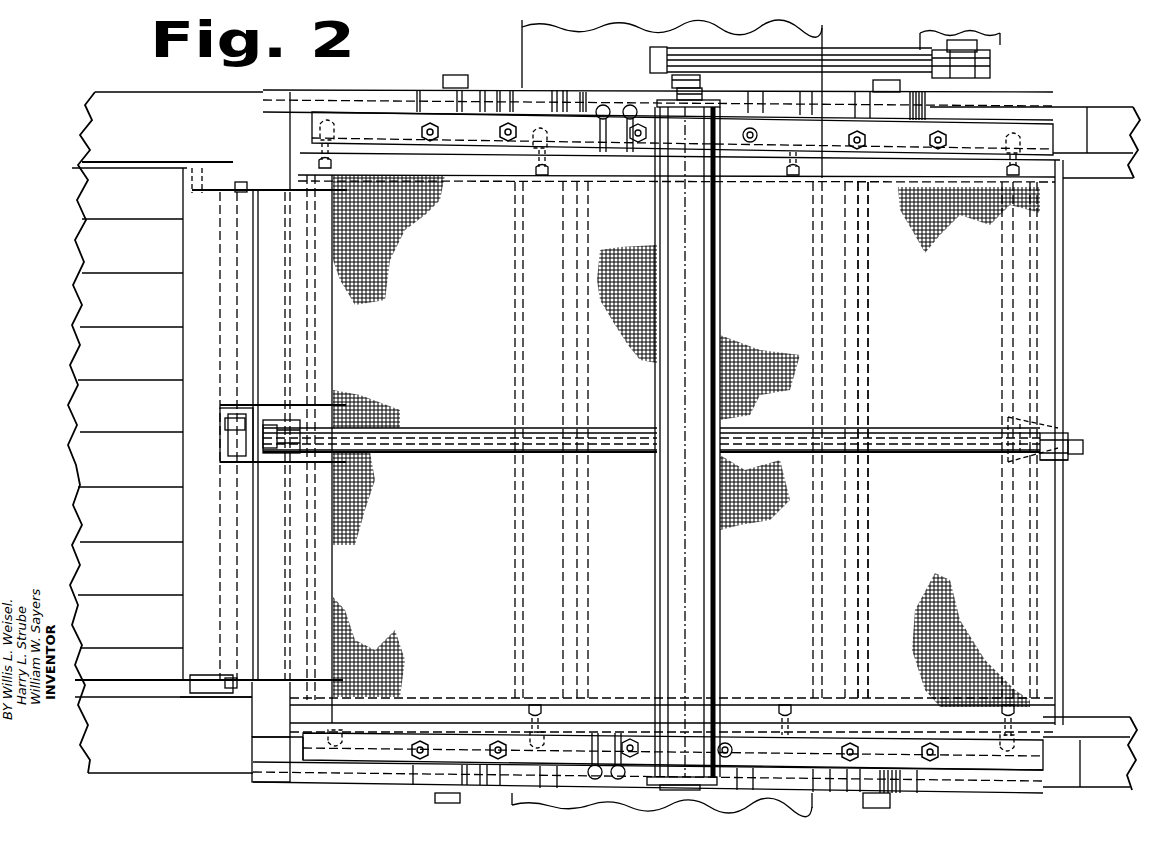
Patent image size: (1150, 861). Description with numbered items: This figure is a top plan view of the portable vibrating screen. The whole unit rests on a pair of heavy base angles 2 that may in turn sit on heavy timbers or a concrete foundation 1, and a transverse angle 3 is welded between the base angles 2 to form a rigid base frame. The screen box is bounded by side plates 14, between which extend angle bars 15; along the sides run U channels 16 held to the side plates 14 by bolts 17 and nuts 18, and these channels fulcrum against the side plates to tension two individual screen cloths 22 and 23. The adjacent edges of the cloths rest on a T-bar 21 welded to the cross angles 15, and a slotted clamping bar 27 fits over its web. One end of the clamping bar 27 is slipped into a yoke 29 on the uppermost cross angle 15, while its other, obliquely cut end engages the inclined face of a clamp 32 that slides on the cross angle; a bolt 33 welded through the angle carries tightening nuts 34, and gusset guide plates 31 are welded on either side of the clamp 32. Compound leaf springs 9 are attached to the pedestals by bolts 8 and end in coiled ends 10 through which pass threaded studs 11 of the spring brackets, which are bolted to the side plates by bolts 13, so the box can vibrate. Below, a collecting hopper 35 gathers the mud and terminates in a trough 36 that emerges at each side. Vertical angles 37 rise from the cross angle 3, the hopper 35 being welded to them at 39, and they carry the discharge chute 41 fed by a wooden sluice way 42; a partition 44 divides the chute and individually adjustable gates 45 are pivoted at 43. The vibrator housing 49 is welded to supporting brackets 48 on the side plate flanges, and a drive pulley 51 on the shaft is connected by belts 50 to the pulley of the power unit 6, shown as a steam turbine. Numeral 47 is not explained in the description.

The foundation 1 is at (1115, 178).
The base angles 2 is at (1090, 108).
The transverse angle 3 is at (285, 783).
The power unit 6 is at (1002, 40).
The bolts 8 is at (604, 104).
The compound leaf springs 9 is at (580, 92).
The coiled ends 10 is at (420, 88).
The threaded studs 11 is at (457, 73).
The bolts 13 is at (440, 131).
The side plates 14 is at (1060, 136).
The angle bars 15 is at (1063, 540).
The U channels 16 is at (450, 175).
The bolts 17 is at (542, 176).
The nuts 18 is at (338, 128).
The T-bar 21 is at (455, 430).
The screen cloth 22 is at (900, 440).
The screen cloth 23 is at (907, 440).
The clamping bar 27 is at (910, 432).
The yoke 29 is at (283, 456).
The gusset guide plates 31 is at (1013, 416).
The clamp 32 is at (1063, 432).
The bolt 33 is at (1085, 446).
The tightening nuts 34 is at (1070, 460).
The collecting hopper 35 is at (270, 739).
The trough 36 is at (525, 42).
The vertical angles 37 is at (252, 717).
The weld 39 is at (252, 700).
The discharge chute 41 is at (325, 340).
The wooden sluice way 42 is at (90, 470).
The pivot 43 is at (237, 180).
The partition 44 is at (218, 458).
The adjustable gates 45 is at (220, 296).
The nut 47 is at (600, 152).
The supporting brackets 48 is at (638, 145).
The housing 49 is at (655, 515).
The belts 50 is at (848, 56).
The drive pulley 51 is at (722, 55).